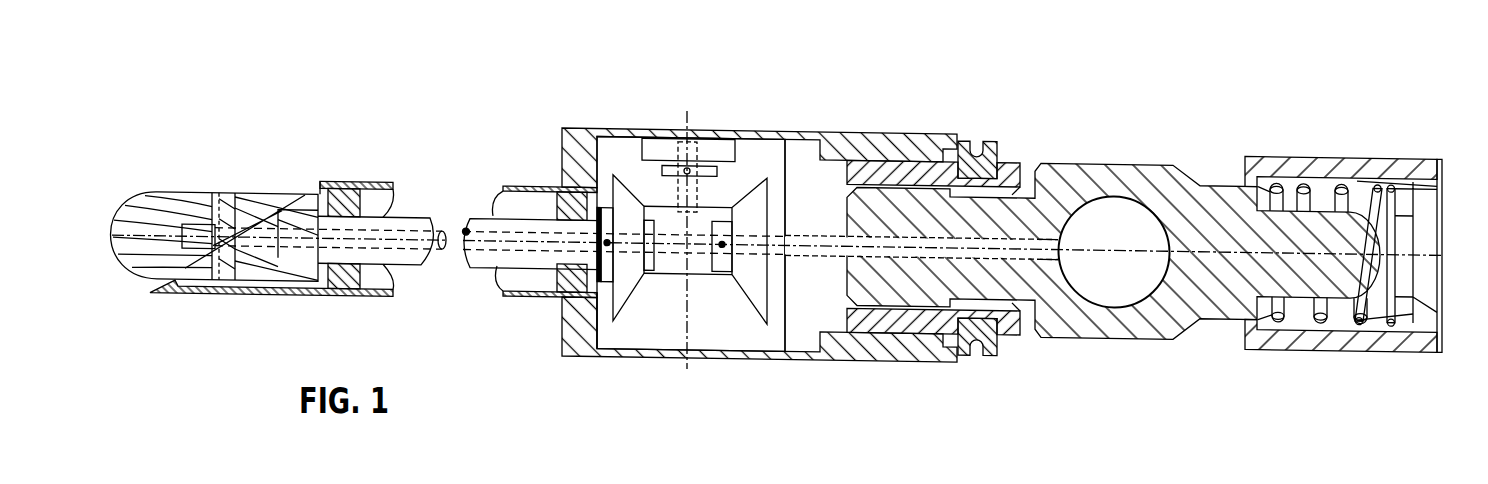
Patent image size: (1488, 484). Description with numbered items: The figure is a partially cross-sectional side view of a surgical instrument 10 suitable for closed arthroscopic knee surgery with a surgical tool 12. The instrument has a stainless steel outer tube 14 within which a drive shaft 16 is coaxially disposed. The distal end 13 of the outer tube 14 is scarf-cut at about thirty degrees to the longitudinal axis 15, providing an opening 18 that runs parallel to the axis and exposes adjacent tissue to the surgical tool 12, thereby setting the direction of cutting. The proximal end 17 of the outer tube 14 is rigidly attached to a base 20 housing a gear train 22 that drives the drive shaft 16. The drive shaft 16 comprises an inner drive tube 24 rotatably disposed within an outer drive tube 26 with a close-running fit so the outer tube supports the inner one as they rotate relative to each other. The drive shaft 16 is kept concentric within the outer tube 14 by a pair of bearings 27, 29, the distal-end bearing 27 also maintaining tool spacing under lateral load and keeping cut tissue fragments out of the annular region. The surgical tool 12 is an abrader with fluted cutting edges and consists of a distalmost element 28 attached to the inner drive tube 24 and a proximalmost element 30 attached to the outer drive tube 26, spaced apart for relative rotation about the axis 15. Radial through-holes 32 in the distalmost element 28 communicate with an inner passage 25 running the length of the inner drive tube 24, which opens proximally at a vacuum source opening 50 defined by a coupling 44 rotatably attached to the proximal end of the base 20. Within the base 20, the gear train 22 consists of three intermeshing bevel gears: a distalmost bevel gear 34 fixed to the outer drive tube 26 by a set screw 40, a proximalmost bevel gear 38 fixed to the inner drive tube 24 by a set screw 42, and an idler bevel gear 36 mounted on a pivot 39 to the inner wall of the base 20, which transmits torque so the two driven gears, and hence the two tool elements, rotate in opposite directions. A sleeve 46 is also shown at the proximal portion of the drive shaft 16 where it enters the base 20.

The surgical instrument 10 is at (852, 71).
The surgical tool 12 is at (235, 169).
The distal end 13 is at (175, 300).
The outer tube 14 is at (348, 186).
The longitudinal axis 15 is at (1448, 241).
The drive shaft 16 is at (413, 212).
The proximal end 17 is at (597, 295).
The opening 18 is at (315, 190).
The base 20 is at (755, 128).
The gear train 22 is at (621, 167).
The inner drive tube 24 is at (437, 235).
The inner passage 25 is at (1054, 243).
The outer drive tube 26 is at (487, 263).
The distal-end bearing 27 is at (378, 300).
The distalmost element 28 is at (168, 199).
The bearing 29 is at (570, 279).
The proximalmost element 30 is at (248, 198).
The through-holes 32 is at (197, 198).
The distalmost bevel gear 34 is at (625, 286).
The idler bevel gear 36 is at (668, 199).
The proximalmost bevel gear 38 is at (758, 289).
The pivot 39 is at (697, 150).
The set screw 40 is at (612, 256).
The set screw 42 is at (718, 247).
The coupling 44 is at (1082, 155).
The sleeve 46 is at (507, 209).
The vacuum source opening 50 is at (1126, 272).